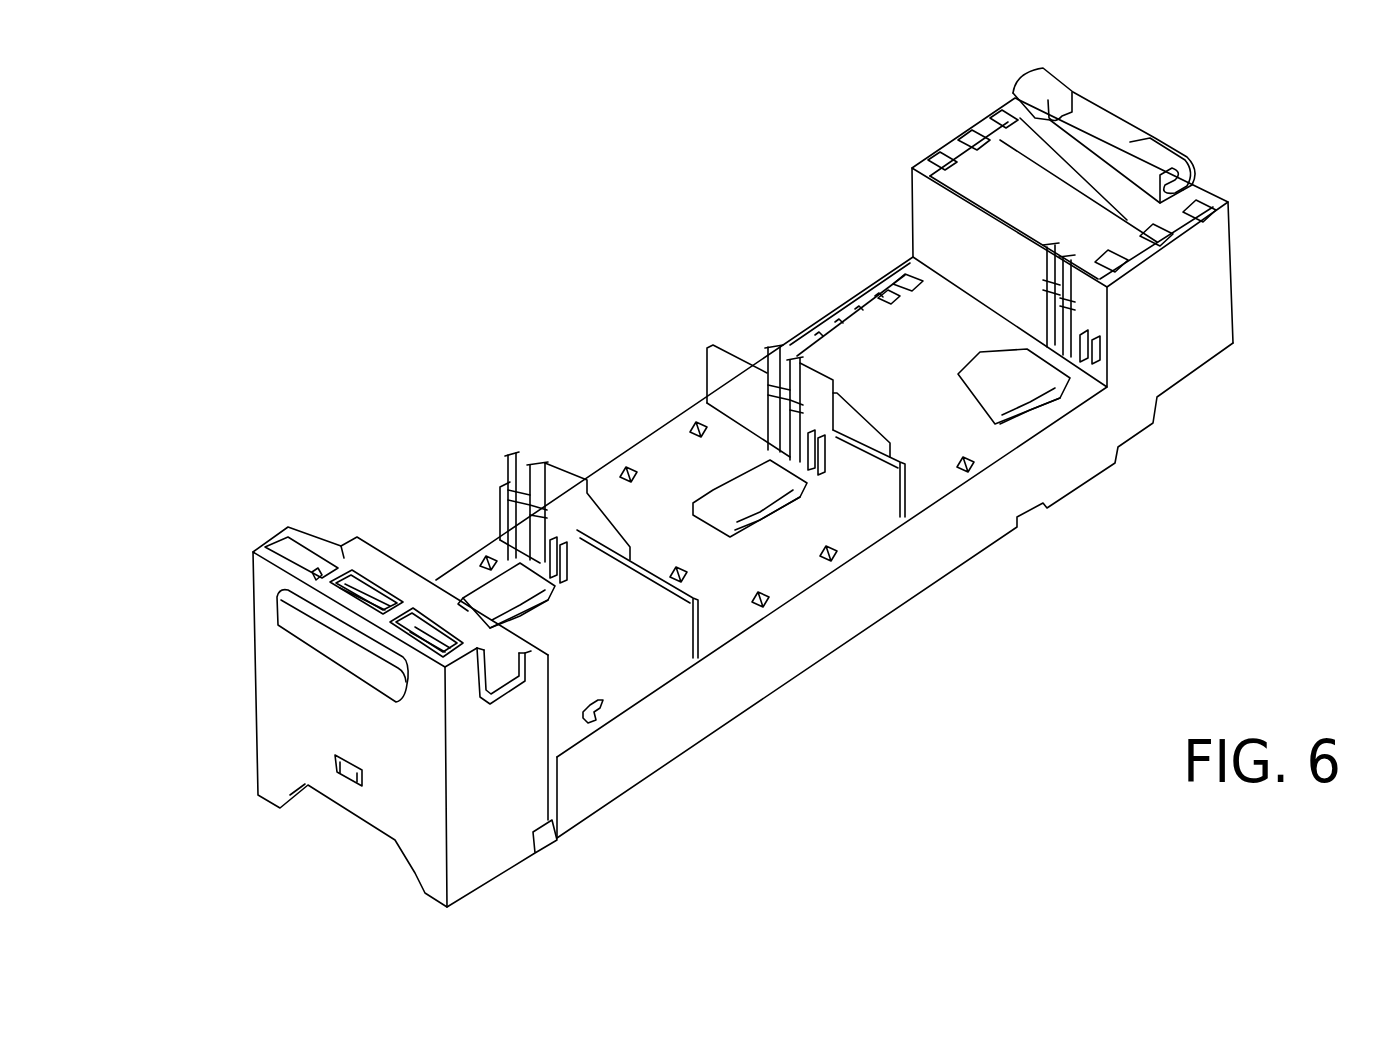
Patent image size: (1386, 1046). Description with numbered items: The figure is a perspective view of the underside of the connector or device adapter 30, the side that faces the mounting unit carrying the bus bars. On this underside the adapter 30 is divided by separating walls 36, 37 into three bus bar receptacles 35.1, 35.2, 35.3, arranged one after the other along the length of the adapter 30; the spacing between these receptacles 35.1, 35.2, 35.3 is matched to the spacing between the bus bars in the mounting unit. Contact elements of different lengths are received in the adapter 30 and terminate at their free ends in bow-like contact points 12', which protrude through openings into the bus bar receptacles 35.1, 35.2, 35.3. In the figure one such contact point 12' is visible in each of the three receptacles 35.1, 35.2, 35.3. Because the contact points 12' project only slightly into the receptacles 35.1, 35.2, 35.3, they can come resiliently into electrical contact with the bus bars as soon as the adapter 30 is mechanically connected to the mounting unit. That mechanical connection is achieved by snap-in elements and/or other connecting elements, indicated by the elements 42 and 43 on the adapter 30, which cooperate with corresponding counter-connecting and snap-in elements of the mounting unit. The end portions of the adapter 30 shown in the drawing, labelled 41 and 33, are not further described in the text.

The connector or device adapter 30 is at (840, 625).
The end housing 33 is at (1198, 343).
The bus bar receptacle 35.1 is at (795, 280).
The bus bar receptacle 35.2 is at (594, 428).
The bus bar receptacle 35.3 is at (414, 524).
The separating wall 36 is at (723, 377).
The separating wall 37 is at (683, 630).
The end housing 41 is at (498, 852).
The snap-in or connecting element 42 is at (290, 620).
The snap-in or connecting element 43 is at (1165, 152).
The contact point 12' is at (783, 488).